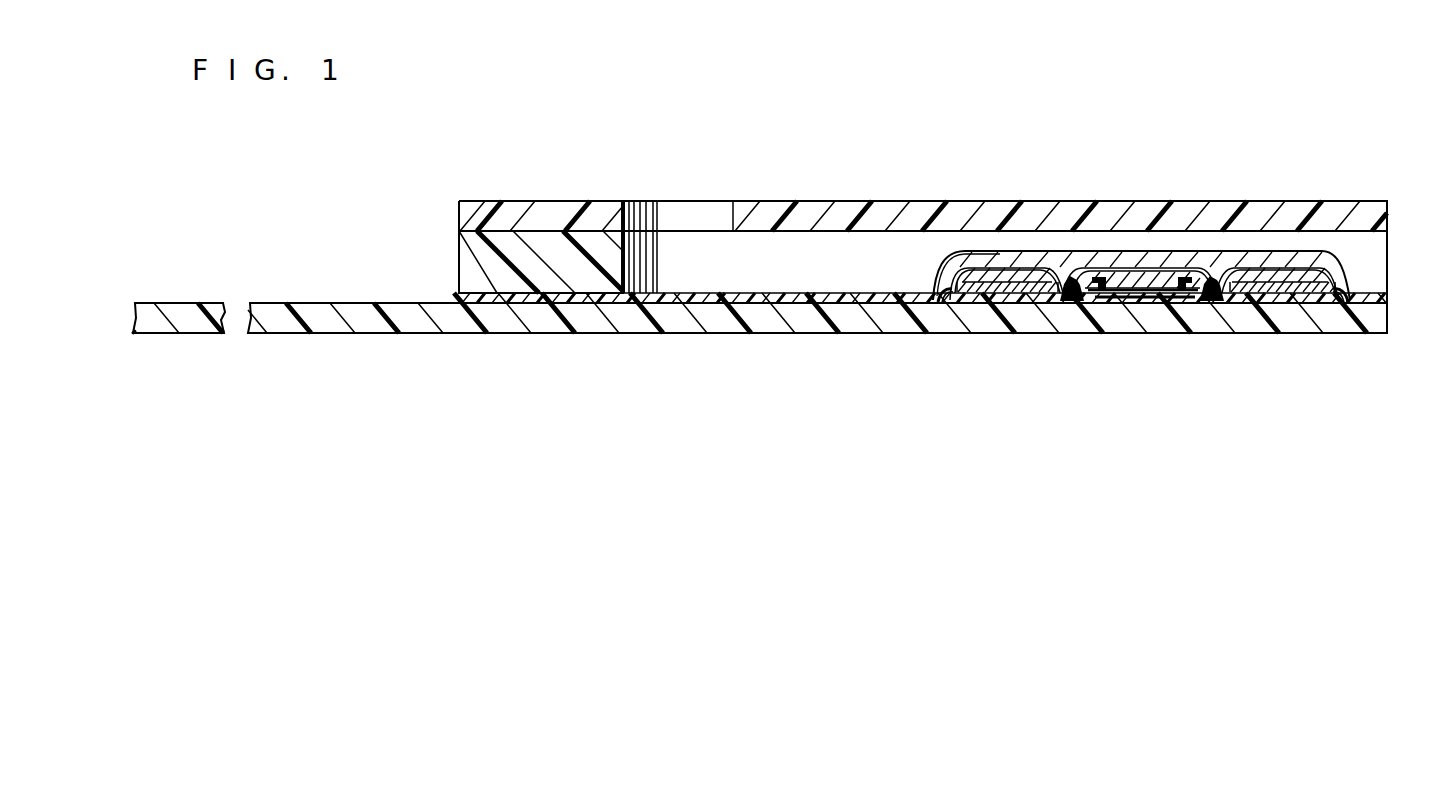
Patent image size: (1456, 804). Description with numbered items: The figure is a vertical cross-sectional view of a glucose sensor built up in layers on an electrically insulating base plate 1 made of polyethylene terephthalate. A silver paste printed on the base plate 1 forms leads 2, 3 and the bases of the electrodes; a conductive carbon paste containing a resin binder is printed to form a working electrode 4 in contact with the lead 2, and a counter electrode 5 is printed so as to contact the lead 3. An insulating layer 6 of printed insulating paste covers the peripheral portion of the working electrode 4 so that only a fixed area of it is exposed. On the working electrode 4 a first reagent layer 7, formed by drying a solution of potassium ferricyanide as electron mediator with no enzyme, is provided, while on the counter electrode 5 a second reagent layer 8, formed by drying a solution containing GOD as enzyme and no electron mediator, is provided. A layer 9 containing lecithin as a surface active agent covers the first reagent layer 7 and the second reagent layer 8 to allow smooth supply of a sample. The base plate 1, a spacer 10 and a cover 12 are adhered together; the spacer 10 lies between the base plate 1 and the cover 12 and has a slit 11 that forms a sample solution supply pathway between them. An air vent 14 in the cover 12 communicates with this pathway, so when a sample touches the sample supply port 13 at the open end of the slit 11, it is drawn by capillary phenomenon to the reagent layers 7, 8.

The base plate 1 is at (358, 320).
The lead 2 is at (1141, 305).
The lead 3 is at (1000, 300).
The working electrode 4 is at (1089, 305).
The counter electrode 5 is at (953, 302).
The insulating layer 6 is at (458, 297).
The first reagent layer 7 is at (1149, 268).
The second reagent layer 8 is at (1006, 268).
The surface active agent layer 9 is at (968, 262).
The spacer 10 is at (483, 256).
The slit 11 is at (688, 270).
The cover 12 is at (519, 213).
The sample supply port 13 is at (1373, 281).
The air vent 14 is at (679, 212).